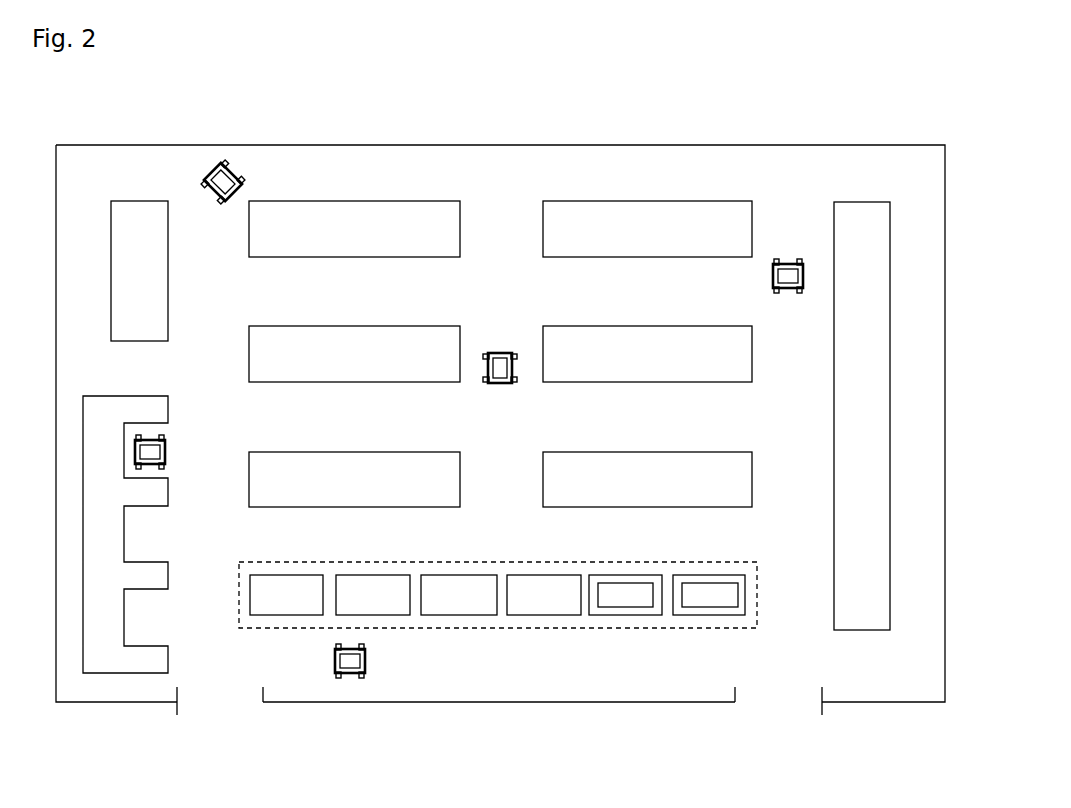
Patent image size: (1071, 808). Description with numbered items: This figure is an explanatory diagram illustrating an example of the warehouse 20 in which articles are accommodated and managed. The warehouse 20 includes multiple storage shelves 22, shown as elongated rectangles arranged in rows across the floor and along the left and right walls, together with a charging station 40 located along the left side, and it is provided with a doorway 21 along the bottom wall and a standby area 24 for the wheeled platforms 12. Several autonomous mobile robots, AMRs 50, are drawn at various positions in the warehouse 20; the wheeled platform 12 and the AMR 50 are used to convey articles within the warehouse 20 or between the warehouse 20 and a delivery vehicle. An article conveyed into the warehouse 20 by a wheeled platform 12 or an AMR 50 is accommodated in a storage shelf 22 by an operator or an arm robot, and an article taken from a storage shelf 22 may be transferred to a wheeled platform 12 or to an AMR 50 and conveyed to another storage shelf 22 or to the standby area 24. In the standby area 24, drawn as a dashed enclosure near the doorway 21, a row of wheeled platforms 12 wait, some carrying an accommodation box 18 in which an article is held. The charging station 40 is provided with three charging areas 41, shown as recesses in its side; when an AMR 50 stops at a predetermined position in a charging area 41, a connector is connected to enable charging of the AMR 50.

The wheeled platform 12 is at (552, 617).
The accommodation box 18 is at (708, 595).
The warehouse 20 is at (786, 121).
The doorway 21 is at (263, 702).
The storage shelf 22 is at (140, 200).
The standby area 24 is at (460, 562).
The charging station 40 is at (146, 673).
The charging area 41 is at (155, 477).
The autonomous mobile robot (AMR) 50 is at (238, 170).